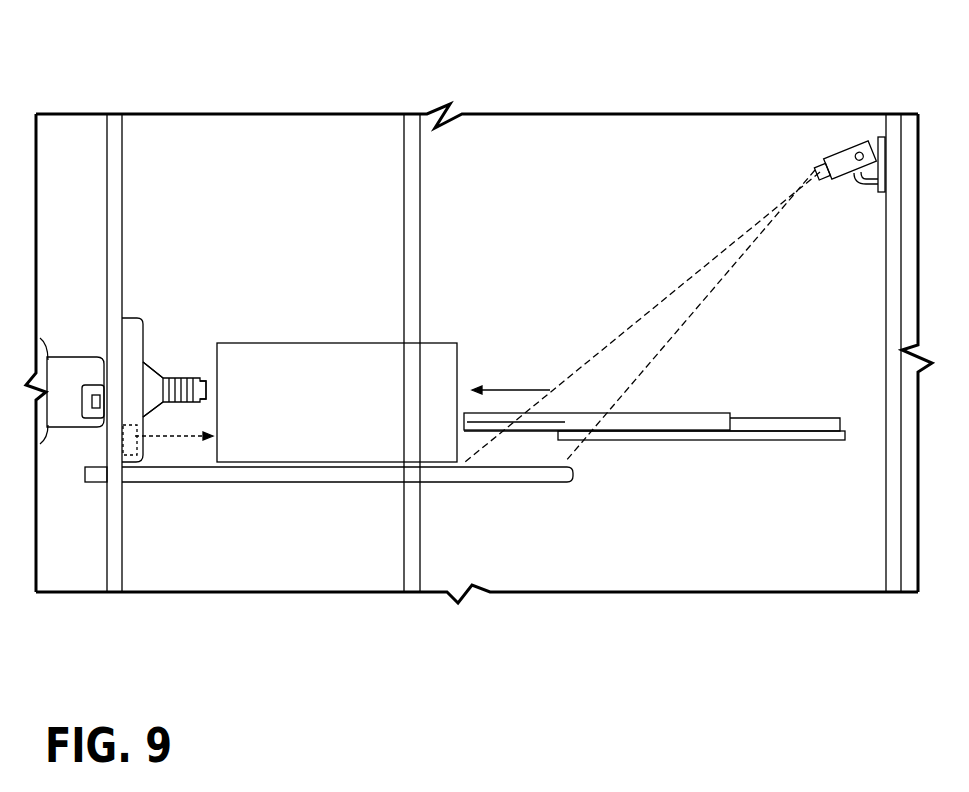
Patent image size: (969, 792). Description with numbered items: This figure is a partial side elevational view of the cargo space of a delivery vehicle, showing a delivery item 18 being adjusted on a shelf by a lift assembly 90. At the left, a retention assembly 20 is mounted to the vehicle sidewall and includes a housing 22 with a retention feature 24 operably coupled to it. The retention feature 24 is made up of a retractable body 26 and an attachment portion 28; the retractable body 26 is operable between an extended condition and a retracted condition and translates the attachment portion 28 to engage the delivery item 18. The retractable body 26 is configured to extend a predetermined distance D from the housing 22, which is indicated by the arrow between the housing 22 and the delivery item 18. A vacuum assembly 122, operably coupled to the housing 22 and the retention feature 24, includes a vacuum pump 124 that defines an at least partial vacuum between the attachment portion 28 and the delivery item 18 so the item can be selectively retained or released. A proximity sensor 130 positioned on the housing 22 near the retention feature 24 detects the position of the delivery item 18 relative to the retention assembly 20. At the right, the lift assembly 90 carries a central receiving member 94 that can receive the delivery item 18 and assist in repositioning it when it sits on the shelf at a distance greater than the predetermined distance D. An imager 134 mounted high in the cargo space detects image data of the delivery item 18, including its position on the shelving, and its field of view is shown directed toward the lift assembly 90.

The delivery item 18 is at (337, 372).
The retention assembly 20 is at (168, 308).
The housing 22 is at (140, 318).
The retention feature 24 is at (152, 400).
The retractable body 26 is at (180, 378).
The attachment portion 28 is at (207, 389).
The lift assembly 90 is at (768, 441).
The central receiving member 94 is at (530, 427).
The vacuum assembly 122 is at (69, 356).
The vacuum pump 124 is at (84, 407).
The proximity sensor 130 is at (133, 458).
The imager 134 is at (848, 160).
The predetermined distance D is at (190, 440).